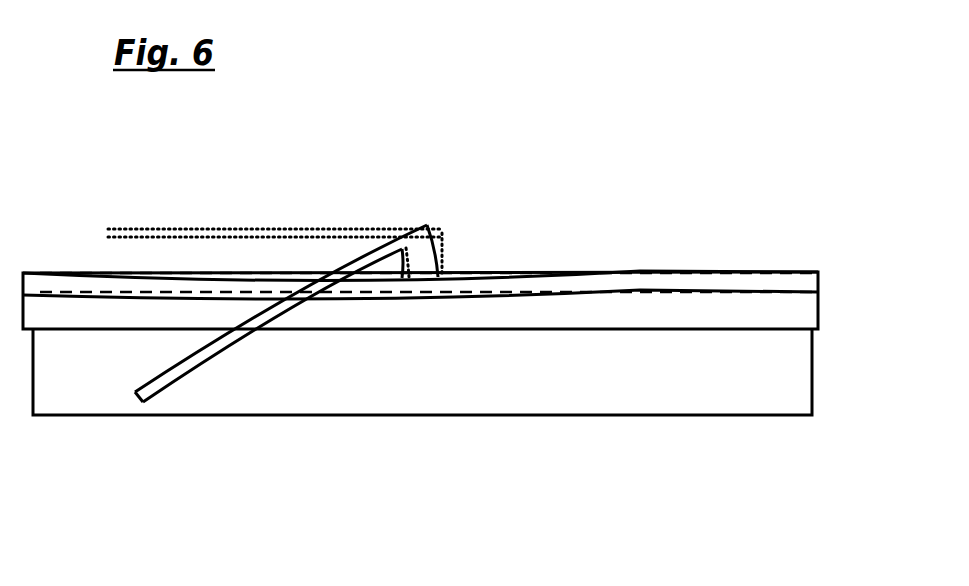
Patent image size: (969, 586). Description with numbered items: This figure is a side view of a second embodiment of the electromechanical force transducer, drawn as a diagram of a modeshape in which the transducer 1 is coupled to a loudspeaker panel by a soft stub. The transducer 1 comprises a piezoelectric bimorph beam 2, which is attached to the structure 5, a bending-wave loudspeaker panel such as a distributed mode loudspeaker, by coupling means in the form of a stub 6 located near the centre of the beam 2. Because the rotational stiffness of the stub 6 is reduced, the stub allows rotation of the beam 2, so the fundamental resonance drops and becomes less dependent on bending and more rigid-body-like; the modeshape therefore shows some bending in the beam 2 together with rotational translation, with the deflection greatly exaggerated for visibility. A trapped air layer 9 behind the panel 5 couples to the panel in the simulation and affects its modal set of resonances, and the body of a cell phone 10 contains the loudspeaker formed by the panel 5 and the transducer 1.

The transducer 1 is at (384, 210).
The first piezoelectric beam 2 is at (190, 372).
The structure 5 is at (635, 273).
The rigid stub 6 is at (443, 248).
The trapped air layer 9 is at (818, 311).
The body of a cell phone 10 is at (530, 415).